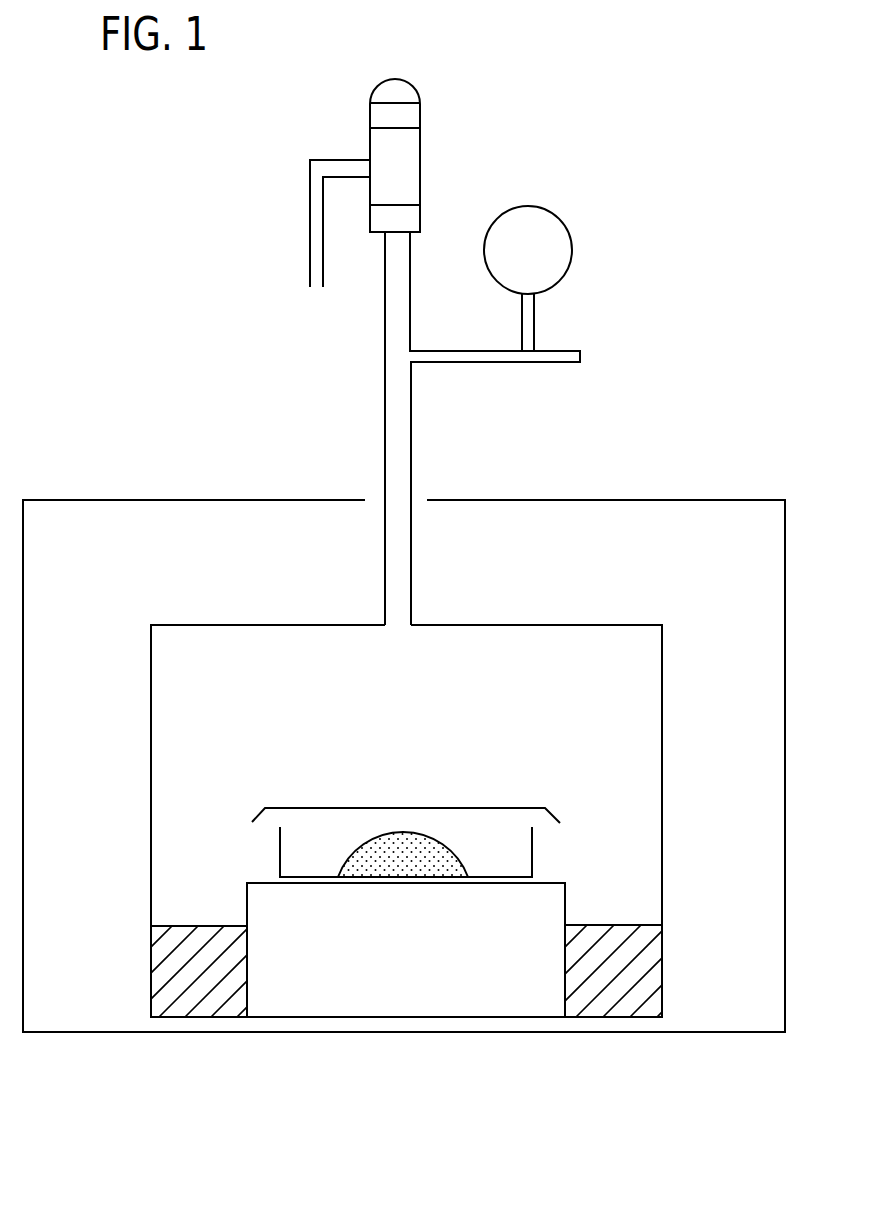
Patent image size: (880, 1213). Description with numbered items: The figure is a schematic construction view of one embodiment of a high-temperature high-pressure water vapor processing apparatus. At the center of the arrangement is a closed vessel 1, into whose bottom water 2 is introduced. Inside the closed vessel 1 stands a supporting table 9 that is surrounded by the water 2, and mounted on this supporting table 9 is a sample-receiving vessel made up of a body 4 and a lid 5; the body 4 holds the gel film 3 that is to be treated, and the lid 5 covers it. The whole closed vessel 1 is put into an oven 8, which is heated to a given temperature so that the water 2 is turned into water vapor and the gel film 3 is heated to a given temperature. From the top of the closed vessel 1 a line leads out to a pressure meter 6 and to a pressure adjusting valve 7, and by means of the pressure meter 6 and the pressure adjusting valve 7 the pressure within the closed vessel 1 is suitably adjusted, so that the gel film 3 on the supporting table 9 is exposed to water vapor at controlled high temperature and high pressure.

The closed vessel 1 is at (662, 641).
The water 2 is at (614, 925).
The gel film 3 is at (458, 848).
The body 4 is at (278, 868).
The lid 5 is at (397, 808).
The pressure meter 6 is at (573, 242).
The pressure adjusting valve 7 is at (422, 157).
The oven 8 is at (713, 498).
The supporting table 9 is at (557, 883).